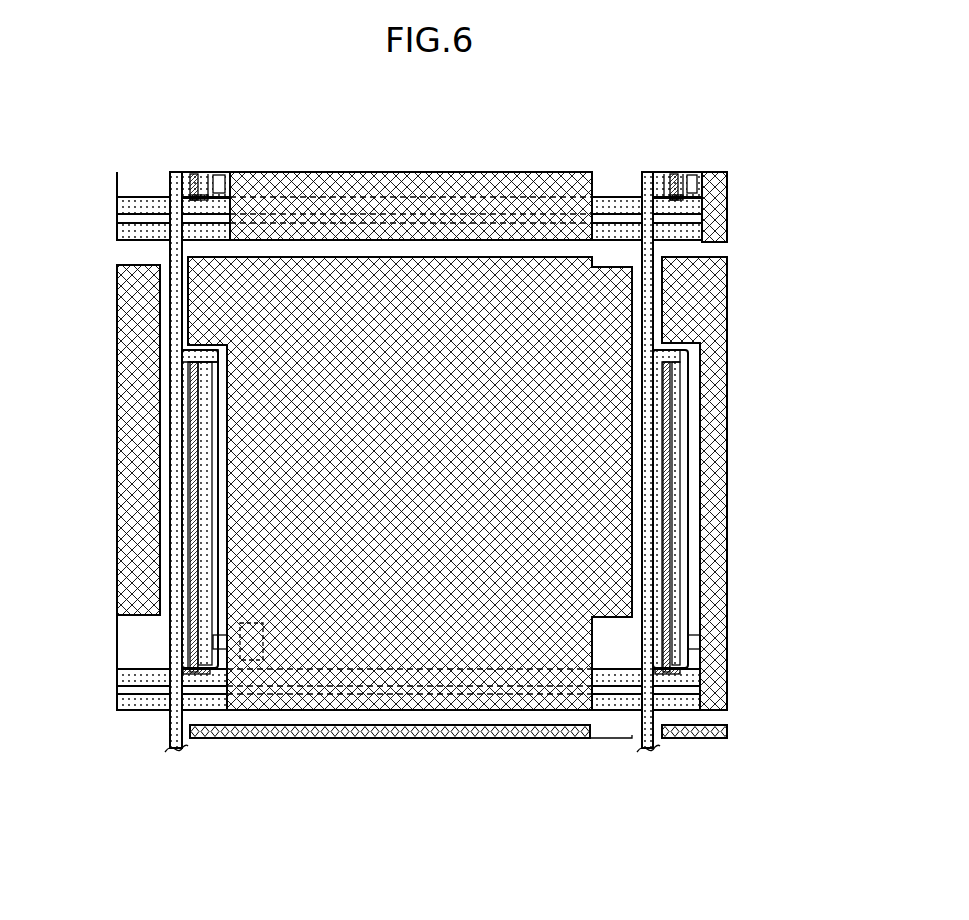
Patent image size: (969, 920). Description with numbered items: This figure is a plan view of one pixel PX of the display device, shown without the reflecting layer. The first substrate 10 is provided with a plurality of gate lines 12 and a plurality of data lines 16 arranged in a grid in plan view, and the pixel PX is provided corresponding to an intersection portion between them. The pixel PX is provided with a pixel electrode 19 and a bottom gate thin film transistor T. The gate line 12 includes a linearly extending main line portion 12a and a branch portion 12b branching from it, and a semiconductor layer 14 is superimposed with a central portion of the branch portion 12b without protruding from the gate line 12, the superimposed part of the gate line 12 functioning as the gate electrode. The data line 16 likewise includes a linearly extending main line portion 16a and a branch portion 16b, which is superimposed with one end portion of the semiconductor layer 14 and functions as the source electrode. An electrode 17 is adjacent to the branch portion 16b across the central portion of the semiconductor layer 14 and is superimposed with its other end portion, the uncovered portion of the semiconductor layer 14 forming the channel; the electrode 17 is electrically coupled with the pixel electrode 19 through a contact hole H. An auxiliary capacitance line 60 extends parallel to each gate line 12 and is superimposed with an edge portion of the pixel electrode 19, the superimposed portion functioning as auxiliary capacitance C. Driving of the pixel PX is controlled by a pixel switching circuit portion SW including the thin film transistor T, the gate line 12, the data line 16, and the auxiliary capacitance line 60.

The first substrate 10 is at (750, 173).
The gate line 12 is at (688, 207).
The main line portion 12a is at (698, 678).
The branch portion 12b is at (680, 353).
The semiconductor layer 14 is at (186, 353).
The data line 16 is at (419, 512).
The main line portion 16a is at (186, 494).
The branch portion 16b is at (183, 674).
The electrode 17 is at (214, 642).
The pixel electrode 19 is at (418, 292).
The auxiliary capacitance line 60 is at (688, 235).
The auxiliary capacitance C is at (467, 730).
The contact hole H is at (257, 668).
The pixel PX is at (410, 406).
The pixel switching circuit portion SW is at (198, 459).
The thin film transistor T is at (150, 502).